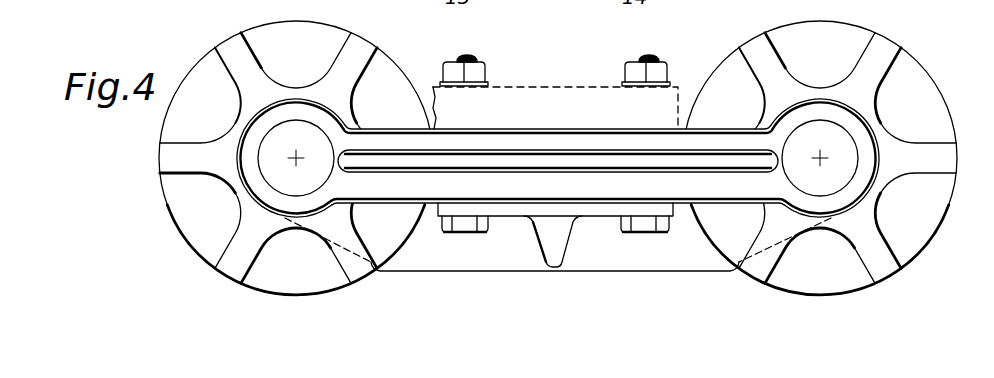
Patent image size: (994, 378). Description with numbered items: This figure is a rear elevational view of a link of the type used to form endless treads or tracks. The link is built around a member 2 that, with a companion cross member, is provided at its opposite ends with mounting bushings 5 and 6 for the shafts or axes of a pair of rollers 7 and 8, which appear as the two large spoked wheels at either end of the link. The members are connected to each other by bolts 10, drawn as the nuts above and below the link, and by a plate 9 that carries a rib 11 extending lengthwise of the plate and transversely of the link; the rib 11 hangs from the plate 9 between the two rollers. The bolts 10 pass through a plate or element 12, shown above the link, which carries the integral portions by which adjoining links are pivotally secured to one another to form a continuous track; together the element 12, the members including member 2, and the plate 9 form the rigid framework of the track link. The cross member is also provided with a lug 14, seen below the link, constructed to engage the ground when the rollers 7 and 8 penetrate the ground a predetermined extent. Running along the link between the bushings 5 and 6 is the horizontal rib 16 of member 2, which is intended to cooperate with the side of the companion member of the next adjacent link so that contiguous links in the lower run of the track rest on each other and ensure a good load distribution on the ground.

The member 2 is at (723, 142).
The mounting bushing 5 is at (853, 132).
The mounting bushing 6 is at (258, 132).
The roller 7 is at (870, 252).
The roller 8 is at (203, 230).
The plate 9 is at (500, 208).
The bolts 10 is at (633, 65).
The rib 11 is at (550, 243).
The plate or element 12 is at (550, 97).
The lug 14 is at (432, 248).
The horizontal rib 16 is at (613, 163).